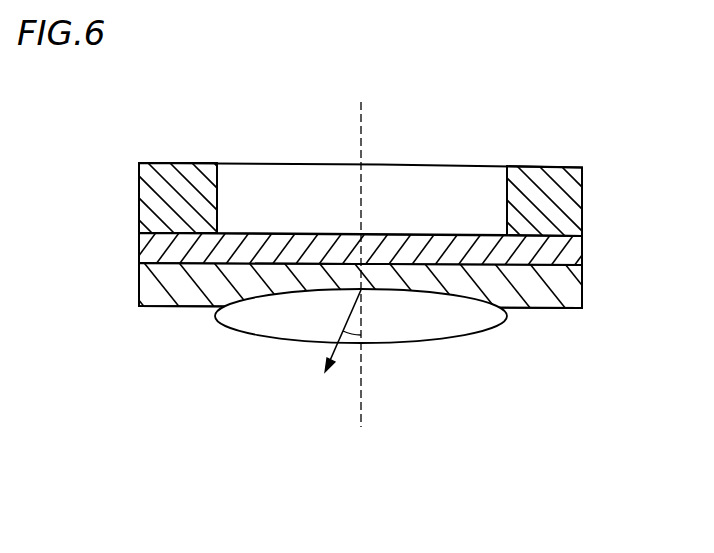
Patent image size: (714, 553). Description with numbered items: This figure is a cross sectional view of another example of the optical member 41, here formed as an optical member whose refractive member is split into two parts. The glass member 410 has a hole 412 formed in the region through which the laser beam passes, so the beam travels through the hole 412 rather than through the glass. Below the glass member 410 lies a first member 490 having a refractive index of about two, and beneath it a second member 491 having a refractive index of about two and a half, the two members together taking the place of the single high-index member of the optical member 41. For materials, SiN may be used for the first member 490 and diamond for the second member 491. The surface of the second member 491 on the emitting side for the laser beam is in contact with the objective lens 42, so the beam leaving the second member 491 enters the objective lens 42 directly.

The optical member 41 is at (623, 130).
The glass member 410 is at (180, 180).
The hole 412 is at (278, 180).
The first member 490 is at (567, 255).
The second member 491 is at (567, 288).
The objective lens 42 is at (297, 330).